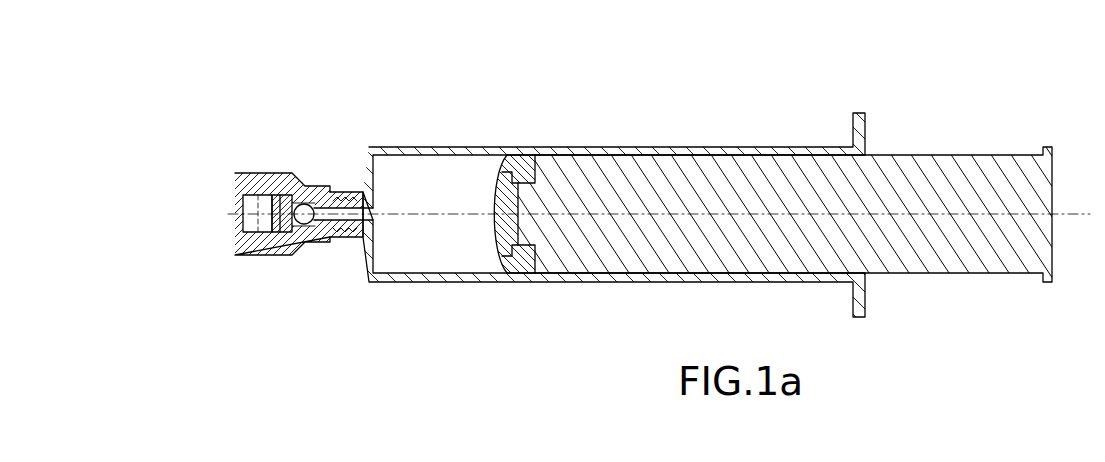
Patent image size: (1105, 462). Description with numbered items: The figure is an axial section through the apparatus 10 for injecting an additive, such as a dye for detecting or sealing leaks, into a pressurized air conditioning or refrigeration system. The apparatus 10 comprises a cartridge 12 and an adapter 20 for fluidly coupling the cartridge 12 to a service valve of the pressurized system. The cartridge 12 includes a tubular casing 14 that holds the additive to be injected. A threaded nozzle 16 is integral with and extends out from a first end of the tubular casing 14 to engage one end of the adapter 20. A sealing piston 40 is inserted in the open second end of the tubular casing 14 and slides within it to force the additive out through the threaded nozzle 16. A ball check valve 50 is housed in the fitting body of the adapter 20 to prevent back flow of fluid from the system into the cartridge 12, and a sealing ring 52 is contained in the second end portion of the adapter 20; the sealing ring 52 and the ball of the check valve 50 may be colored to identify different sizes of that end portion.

The apparatus 10 is at (585, 196).
The cartridge 12 is at (632, 164).
The tubular casing 14 is at (591, 147).
The threaded nozzle 16 is at (349, 192).
The adapter 20 is at (298, 232).
The sealing piston 40 is at (966, 155).
The check valve 50 is at (303, 226).
The sealing ring 52 is at (278, 240).